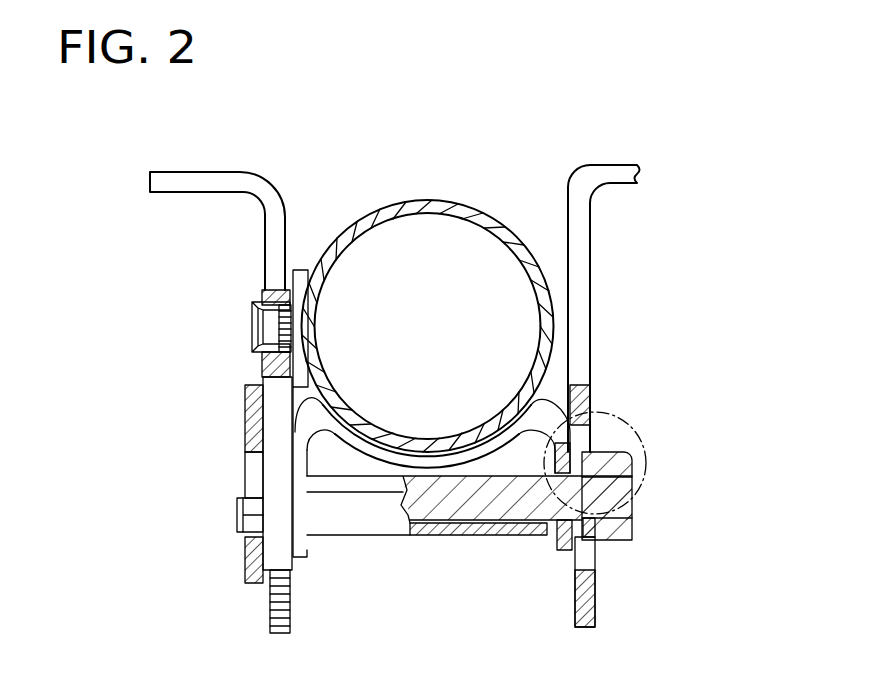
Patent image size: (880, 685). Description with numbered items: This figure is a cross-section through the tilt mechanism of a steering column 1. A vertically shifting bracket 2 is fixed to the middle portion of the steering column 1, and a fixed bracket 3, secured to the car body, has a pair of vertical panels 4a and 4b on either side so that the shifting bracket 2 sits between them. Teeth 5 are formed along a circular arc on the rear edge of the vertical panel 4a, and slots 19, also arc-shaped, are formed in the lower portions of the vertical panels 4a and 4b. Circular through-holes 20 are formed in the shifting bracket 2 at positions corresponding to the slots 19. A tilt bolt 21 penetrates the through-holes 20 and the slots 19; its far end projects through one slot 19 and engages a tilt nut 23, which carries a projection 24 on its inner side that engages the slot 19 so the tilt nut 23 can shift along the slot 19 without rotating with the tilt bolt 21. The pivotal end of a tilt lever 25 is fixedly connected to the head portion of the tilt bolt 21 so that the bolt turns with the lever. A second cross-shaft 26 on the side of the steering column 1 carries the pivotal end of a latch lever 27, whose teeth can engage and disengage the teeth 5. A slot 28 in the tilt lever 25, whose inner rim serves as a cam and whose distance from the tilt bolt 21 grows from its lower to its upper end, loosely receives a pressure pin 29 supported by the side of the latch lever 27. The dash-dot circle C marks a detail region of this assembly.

The steering column 1 is at (470, 204).
The vertically shifting bracket 2 is at (568, 382).
The fixed bracket 3 is at (604, 178).
The vertical panel 4a is at (265, 246).
The vertical panel 4b is at (580, 276).
The teeth 5 is at (292, 603).
The slots 19 is at (637, 420).
The circular through-holes 20 is at (547, 510).
The tilt bolt 21 is at (430, 505).
The tilt nut 23 is at (632, 532).
The projection 24 is at (598, 553).
The tilt lever 25 is at (247, 430).
The second cross-shaft 26 is at (258, 327).
The latch lever 27 is at (266, 380).
The slot 28 is at (248, 560).
The pressure pin 29 is at (250, 514).
The detail region C is at (632, 470).